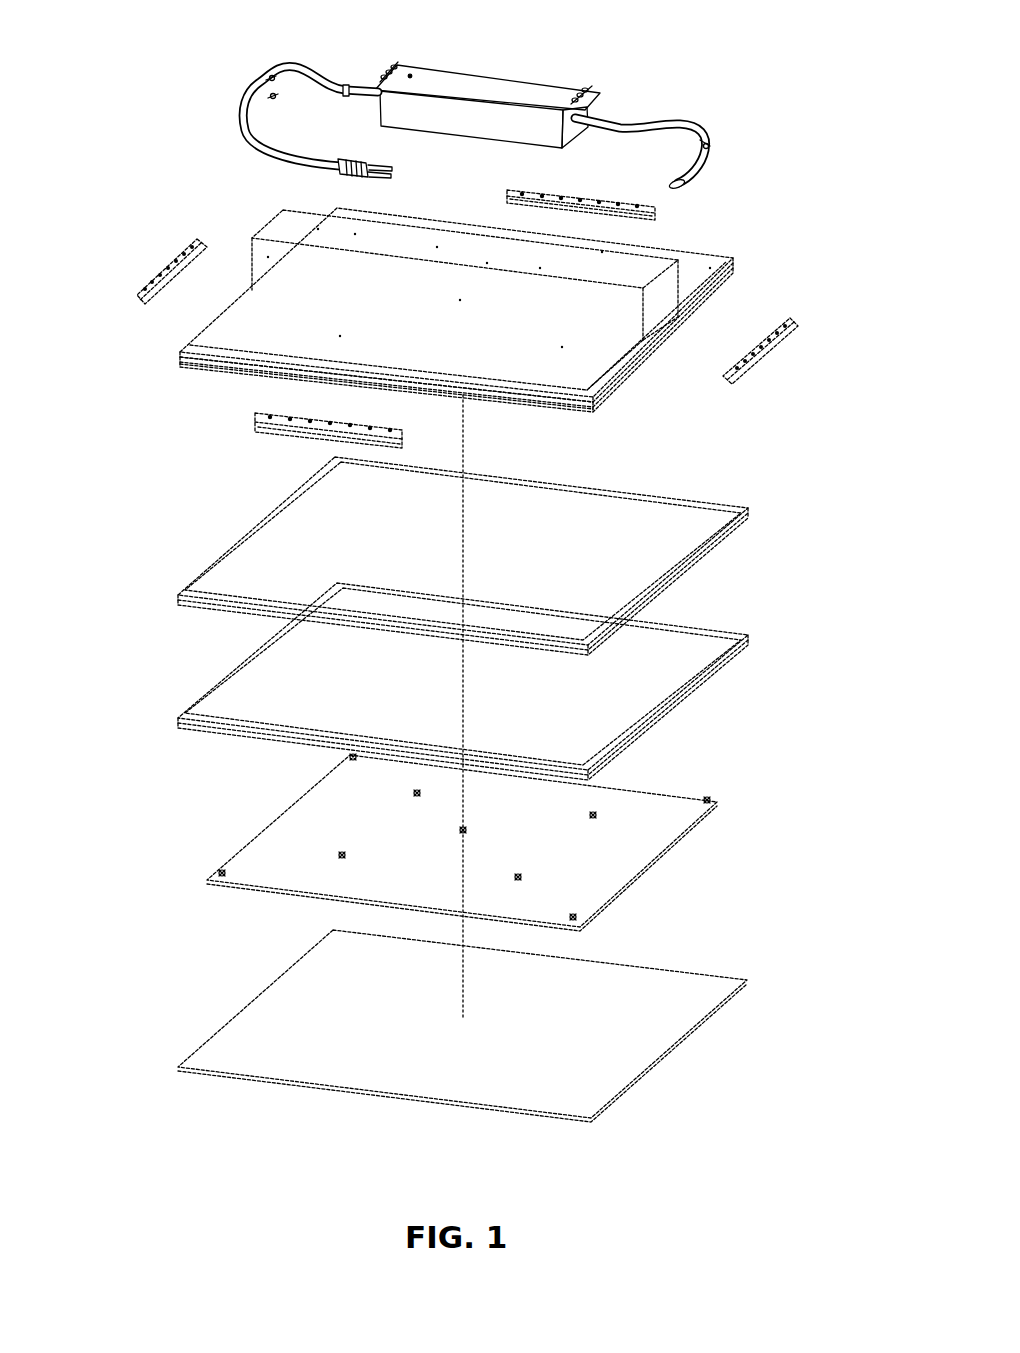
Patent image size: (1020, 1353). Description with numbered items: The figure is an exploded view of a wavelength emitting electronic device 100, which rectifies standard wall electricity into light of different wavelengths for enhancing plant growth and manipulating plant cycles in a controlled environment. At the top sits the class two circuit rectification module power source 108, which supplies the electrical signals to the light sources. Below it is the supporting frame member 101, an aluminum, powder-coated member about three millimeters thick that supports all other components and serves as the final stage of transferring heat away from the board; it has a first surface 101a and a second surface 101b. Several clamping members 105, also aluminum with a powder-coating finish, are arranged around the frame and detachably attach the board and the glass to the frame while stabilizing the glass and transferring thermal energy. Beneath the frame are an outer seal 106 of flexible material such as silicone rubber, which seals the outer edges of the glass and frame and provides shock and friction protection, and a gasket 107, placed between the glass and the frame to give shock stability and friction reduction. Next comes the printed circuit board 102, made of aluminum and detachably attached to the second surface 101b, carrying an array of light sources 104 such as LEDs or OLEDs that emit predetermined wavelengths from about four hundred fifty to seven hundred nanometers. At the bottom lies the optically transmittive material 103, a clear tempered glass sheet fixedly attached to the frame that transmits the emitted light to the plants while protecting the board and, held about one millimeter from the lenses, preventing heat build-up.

The wavelength emitting electronic device 100 is at (409, 36).
The supporting frame member 101 is at (692, 268).
The first surface 101a is at (230, 334).
The second surface 101b is at (230, 358).
The printed circuit board 102 is at (673, 797).
The optically transmittive material 103 is at (625, 965).
The array of light sources 104 is at (338, 854).
The clamping members 105 is at (573, 197).
The outer seal 106 is at (682, 500).
The gasket 107 is at (682, 625).
The class 2 circuit rectification module power source 108 is at (567, 90).